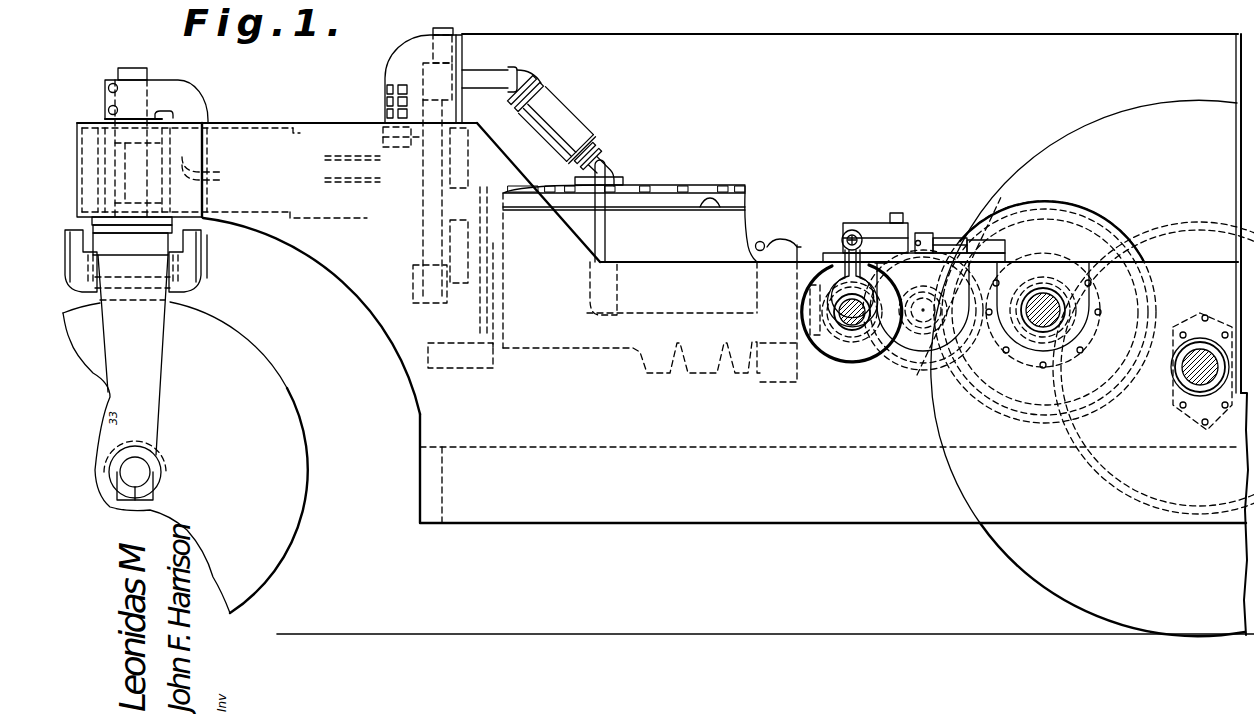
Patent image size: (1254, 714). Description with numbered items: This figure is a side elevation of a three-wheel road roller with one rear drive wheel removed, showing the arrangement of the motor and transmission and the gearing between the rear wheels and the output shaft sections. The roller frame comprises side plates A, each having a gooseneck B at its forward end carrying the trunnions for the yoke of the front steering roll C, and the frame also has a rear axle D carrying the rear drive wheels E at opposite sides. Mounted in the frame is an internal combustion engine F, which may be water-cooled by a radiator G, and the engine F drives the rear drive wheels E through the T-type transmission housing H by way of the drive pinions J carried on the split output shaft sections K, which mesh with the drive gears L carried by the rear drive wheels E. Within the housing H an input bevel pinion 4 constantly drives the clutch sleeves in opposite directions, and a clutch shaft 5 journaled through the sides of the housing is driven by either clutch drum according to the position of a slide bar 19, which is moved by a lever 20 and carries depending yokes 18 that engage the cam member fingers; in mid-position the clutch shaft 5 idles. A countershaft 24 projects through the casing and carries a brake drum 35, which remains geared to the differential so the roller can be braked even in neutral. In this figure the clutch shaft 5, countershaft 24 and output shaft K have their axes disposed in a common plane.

The side plate A is at (728, 497).
The gooseneck B is at (295, 145).
The front steering roll C is at (290, 395).
The rear axle D is at (1195, 370).
The rear drive wheel E is at (1013, 542).
The internal combustion engine F is at (730, 227).
The radiator G is at (427, 208).
The transmission housing H is at (1050, 217).
The drive pinion J is at (1050, 283).
The output shaft section K is at (1040, 322).
The drive gear L is at (1178, 227).
The input bevel pinion 4 is at (813, 313).
The clutch shaft 5 is at (853, 322).
The yoke 18 is at (842, 268).
The slide bar 19 is at (840, 237).
The lever 20 is at (872, 223).
The countershaft 24 is at (921, 322).
The brake drum 35 is at (963, 283).